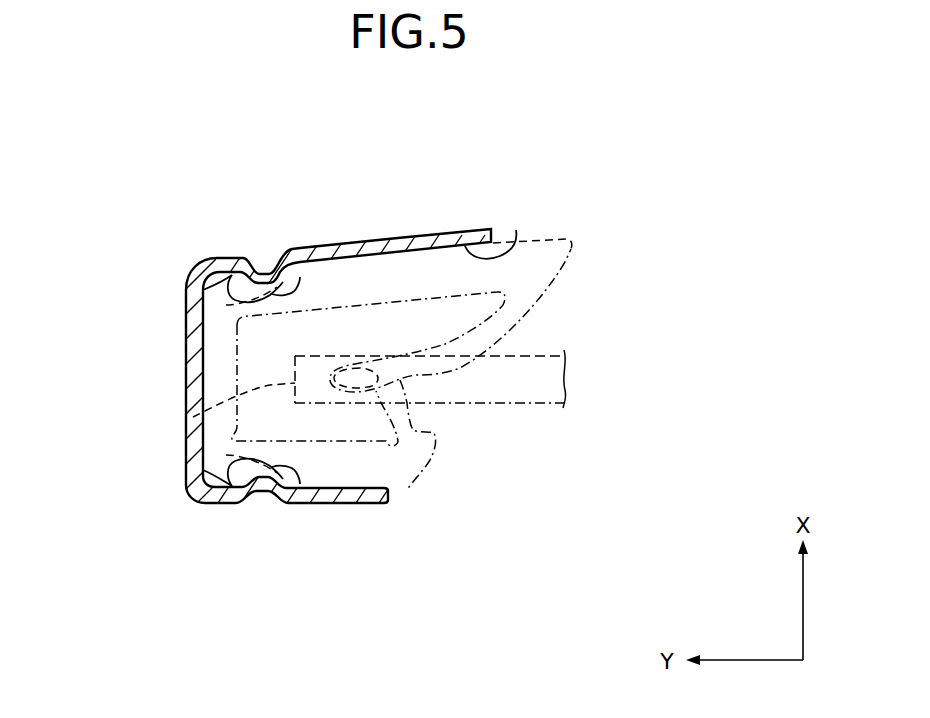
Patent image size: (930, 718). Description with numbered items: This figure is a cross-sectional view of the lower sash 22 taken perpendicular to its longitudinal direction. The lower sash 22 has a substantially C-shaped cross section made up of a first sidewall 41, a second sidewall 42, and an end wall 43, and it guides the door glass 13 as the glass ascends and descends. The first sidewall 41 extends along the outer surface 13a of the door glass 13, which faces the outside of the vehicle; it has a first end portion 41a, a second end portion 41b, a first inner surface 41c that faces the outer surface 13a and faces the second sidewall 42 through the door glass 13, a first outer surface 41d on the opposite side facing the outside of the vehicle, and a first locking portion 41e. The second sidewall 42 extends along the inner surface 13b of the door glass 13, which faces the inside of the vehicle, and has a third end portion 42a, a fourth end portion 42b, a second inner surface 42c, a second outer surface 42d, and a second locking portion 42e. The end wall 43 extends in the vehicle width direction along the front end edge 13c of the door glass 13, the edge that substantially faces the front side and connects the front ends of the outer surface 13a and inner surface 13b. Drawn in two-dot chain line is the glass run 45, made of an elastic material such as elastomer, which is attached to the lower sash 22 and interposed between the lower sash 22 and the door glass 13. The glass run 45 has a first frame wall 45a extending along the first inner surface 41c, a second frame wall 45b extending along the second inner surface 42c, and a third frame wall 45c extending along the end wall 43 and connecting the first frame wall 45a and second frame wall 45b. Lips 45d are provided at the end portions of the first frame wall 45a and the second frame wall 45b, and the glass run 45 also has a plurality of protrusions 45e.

The door glass 13 is at (550, 412).
The outer surface 13a is at (519, 405).
The inner surface 13b is at (541, 355).
The front end edge 13c is at (193, 417).
The lower sash 22 is at (147, 150).
The first sidewall 41 is at (358, 518).
The first end portion 41a is at (205, 505).
The second end portion 41b is at (395, 503).
The first inner surface 41c is at (379, 484).
The first outer surface 41d is at (378, 505).
The first locking portion 41e is at (291, 492).
The second sidewall 42 is at (374, 228).
The third end portion 42a is at (211, 257).
The fourth end portion 42b is at (497, 236).
The second inner surface 42c is at (512, 247).
The second outer surface 42d is at (417, 247).
The second locking portion 42e is at (294, 268).
The end wall 43 is at (197, 377).
The glass run 45 is at (577, 262).
The first frame wall 45a is at (325, 505).
The second frame wall 45b is at (333, 258).
The third frame wall 45c is at (186, 336).
The lips 45d is at (545, 297).
The protrusions 45e is at (233, 256).